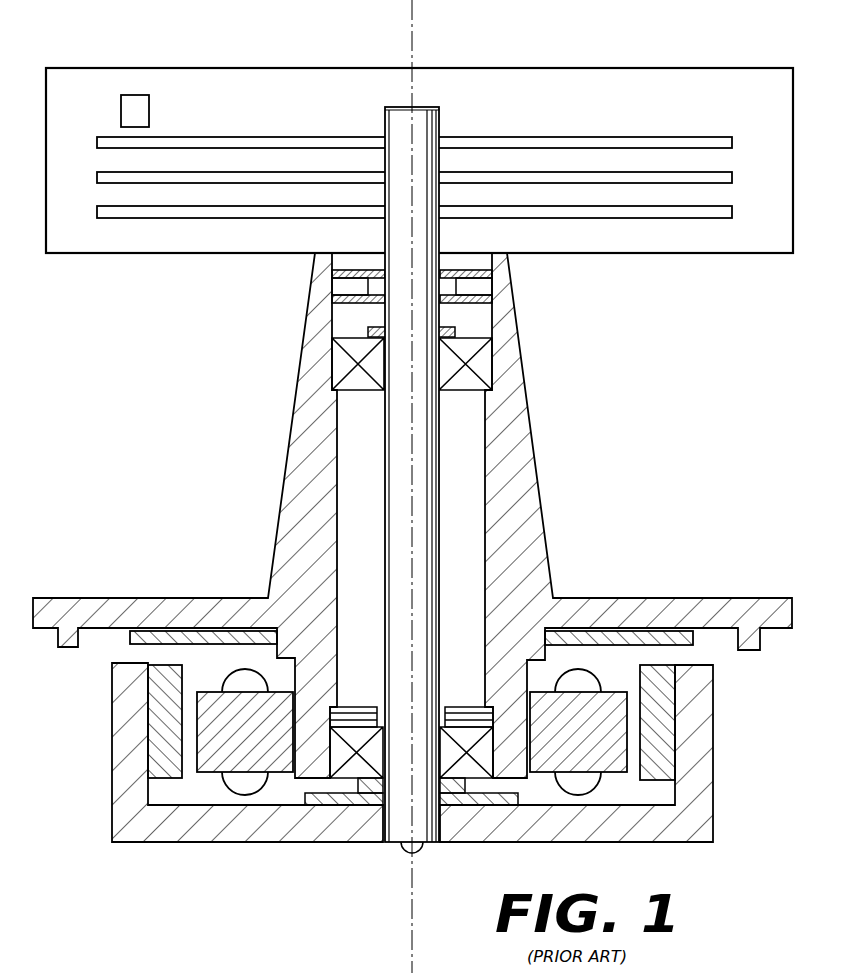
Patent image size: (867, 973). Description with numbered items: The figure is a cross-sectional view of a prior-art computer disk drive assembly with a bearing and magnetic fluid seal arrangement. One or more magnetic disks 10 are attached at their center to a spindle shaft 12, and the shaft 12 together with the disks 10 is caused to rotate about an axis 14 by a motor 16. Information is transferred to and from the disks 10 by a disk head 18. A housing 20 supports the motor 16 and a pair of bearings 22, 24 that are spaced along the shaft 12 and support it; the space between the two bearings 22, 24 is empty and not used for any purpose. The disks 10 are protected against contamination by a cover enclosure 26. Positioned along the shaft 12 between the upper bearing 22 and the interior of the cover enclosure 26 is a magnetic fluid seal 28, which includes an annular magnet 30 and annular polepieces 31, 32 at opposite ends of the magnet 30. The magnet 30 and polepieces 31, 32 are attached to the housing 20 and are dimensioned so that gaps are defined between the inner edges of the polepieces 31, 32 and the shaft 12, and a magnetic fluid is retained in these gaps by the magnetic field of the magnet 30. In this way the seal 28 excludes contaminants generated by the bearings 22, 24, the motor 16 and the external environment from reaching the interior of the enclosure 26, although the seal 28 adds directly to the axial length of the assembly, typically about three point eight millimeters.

The magnetic disks 10 is at (192, 137).
The spindle shaft 12 is at (400, 478).
The axis 14 is at (412, 12).
The motor 16 is at (265, 843).
The disk head 18 is at (121, 107).
The housing 20 is at (292, 478).
The upper bearing 22 is at (340, 362).
The bearing 24 is at (353, 740).
The cover enclosure 26 is at (203, 68).
The magnetic fluid seal 28 is at (330, 285).
The annular magnet 30 is at (493, 288).
The annular polepiece 31 is at (352, 303).
The annular polepiece 32 is at (358, 270).